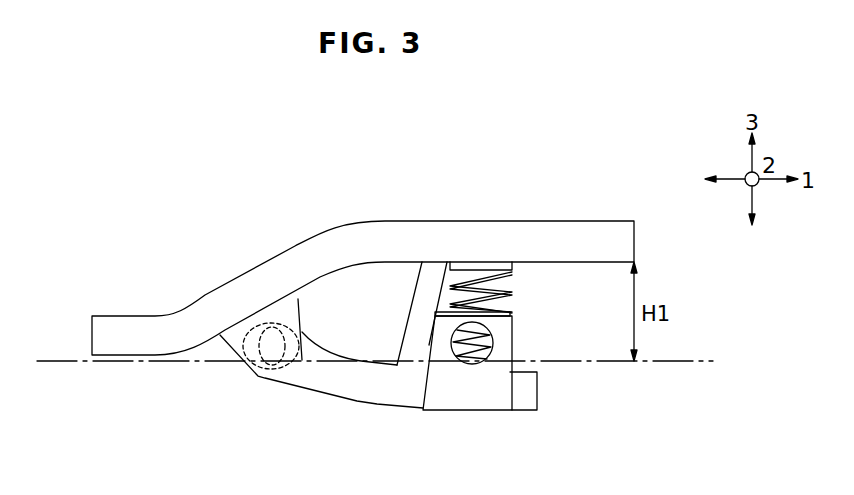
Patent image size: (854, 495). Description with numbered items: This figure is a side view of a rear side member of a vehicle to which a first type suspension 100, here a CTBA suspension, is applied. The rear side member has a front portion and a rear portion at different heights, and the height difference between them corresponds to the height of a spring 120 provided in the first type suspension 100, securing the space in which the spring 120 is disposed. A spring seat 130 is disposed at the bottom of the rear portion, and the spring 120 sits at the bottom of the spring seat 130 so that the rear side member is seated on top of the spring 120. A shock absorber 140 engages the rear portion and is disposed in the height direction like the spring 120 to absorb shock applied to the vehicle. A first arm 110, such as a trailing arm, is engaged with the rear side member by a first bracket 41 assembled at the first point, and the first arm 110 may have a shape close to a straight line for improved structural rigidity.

The first type suspension 100 is at (538, 392).
The first arm 110 is at (358, 382).
The spring 120 is at (441, 288).
The spring seat 130 is at (482, 267).
The shock absorber 140 is at (418, 314).
The first bracket 41 is at (232, 341).